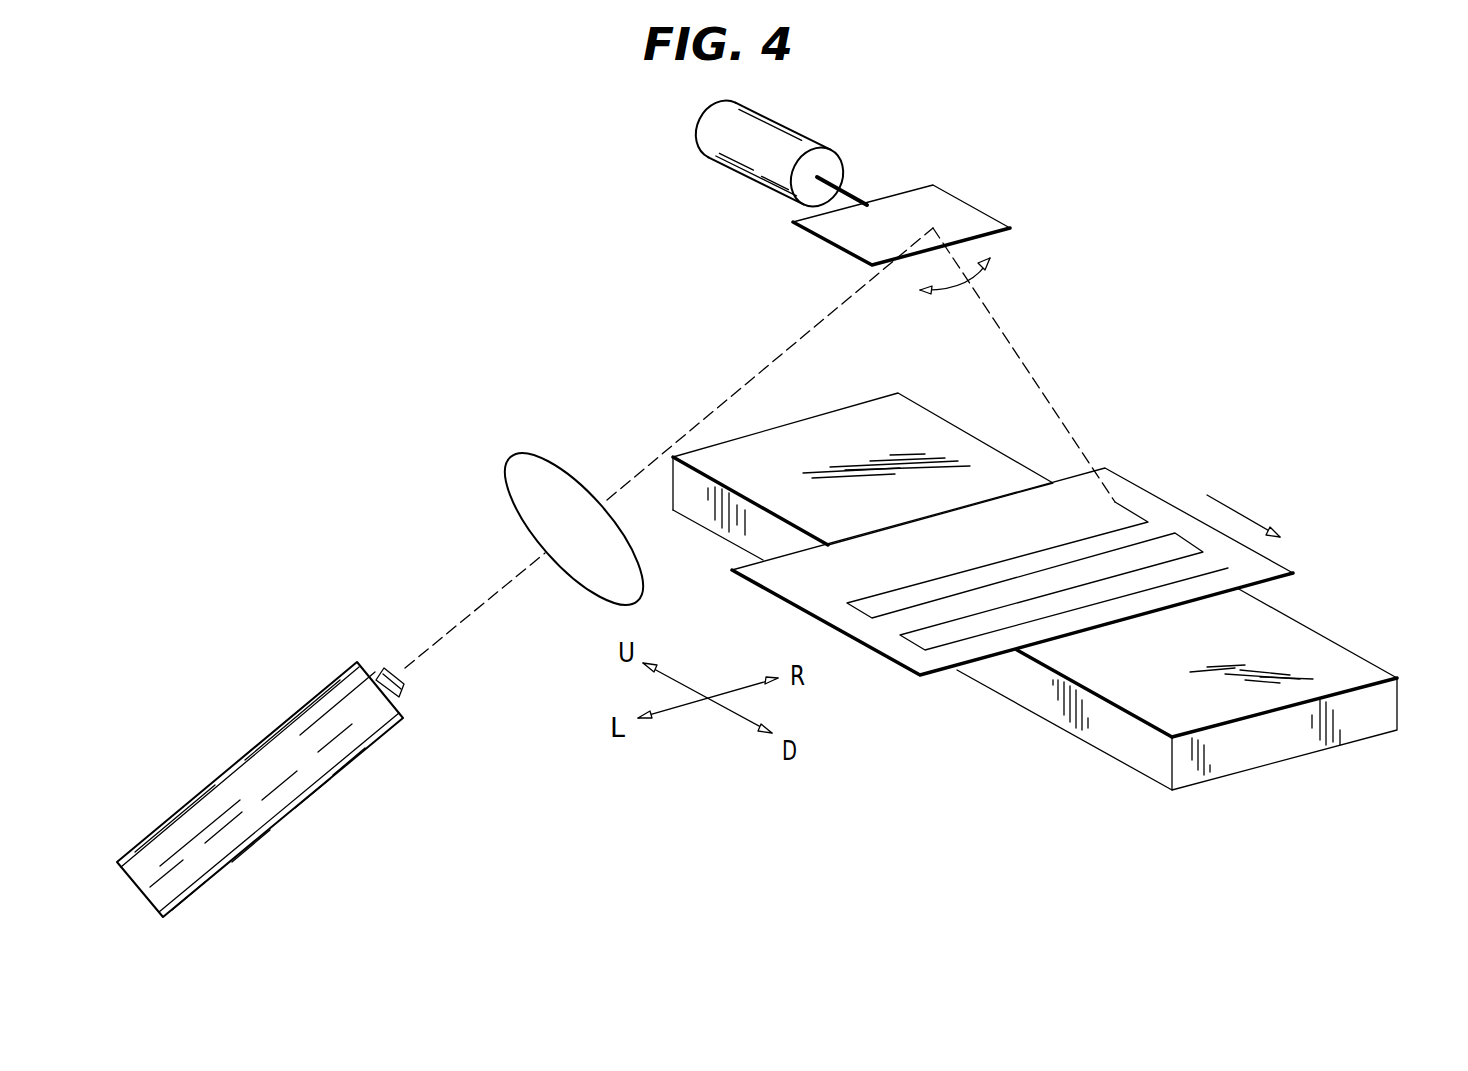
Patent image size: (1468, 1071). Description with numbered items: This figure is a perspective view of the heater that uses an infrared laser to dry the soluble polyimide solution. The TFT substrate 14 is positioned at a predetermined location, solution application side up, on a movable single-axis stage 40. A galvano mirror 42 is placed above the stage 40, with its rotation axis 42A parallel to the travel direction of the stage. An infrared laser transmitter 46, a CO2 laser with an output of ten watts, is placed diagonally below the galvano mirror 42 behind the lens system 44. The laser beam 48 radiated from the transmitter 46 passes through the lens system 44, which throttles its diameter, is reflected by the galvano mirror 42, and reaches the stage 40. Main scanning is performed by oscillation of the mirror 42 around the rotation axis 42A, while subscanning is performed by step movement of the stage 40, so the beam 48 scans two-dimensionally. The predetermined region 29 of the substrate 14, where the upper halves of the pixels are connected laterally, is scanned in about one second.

The TFT substrate 14 is at (1151, 461).
The region 29 is at (940, 648).
The movable single-axis stage 40 is at (1373, 711).
The galvano mirror 42 is at (967, 203).
The rotation axis 42A is at (848, 190).
The lens system 44 is at (537, 452).
The infrared laser transmitter 46 is at (351, 746).
The laser beam 48 is at (503, 587).